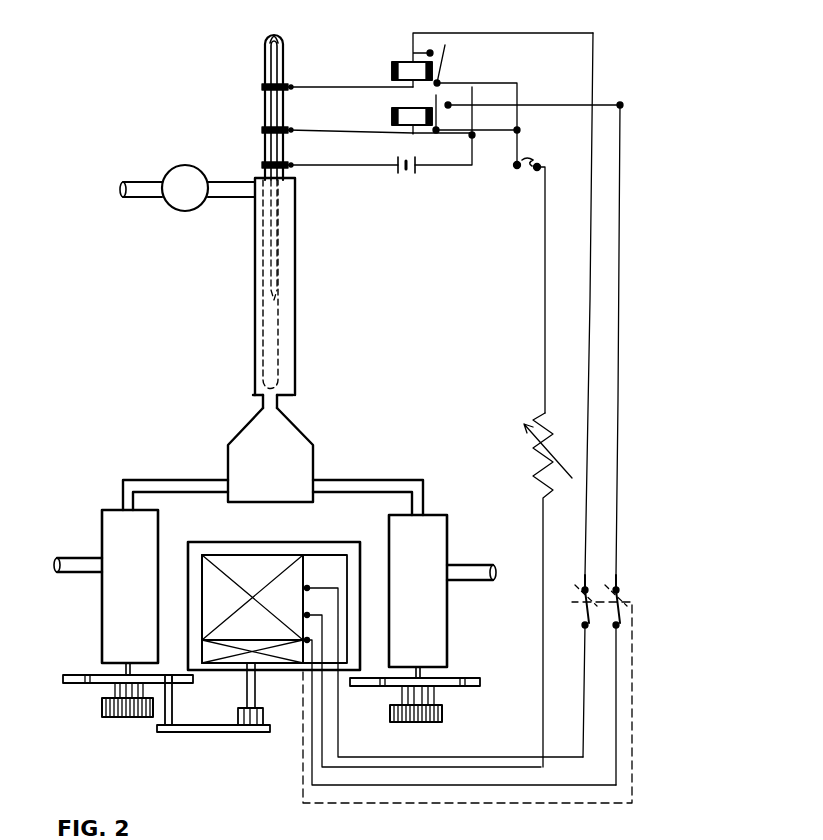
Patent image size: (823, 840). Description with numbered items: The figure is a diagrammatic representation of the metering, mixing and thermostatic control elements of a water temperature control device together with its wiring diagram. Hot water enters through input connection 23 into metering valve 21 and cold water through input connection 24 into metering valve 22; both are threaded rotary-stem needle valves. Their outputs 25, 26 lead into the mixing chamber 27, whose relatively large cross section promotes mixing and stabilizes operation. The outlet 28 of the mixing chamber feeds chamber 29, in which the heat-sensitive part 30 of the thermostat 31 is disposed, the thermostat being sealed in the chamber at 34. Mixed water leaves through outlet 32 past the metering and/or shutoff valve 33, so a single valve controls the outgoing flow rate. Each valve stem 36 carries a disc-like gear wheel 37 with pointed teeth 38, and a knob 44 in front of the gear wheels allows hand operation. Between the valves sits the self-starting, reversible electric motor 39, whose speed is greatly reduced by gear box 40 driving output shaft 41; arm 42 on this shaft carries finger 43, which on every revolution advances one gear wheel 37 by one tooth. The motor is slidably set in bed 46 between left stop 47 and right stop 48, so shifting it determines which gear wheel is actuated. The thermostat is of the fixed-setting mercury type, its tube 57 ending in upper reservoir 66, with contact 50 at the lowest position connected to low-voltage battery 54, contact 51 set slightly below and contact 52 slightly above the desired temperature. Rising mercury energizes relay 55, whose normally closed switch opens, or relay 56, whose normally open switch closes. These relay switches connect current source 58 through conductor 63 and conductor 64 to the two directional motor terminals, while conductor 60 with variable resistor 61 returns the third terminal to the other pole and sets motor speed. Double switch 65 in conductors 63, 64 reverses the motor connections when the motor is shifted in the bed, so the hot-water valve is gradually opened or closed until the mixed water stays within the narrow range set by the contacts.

The metering valve 21 is at (115, 640).
The metering valve 22 is at (430, 637).
The input connection 23 is at (60, 558).
The input connection 24 is at (466, 562).
The output 25 is at (175, 495).
The output 26 is at (424, 512).
The mixing chamber 27 is at (300, 465).
The outlet 28 is at (285, 412).
The chamber 29 is at (294, 287).
The heat-sensitive part 30 is at (275, 340).
The thermostat 31 is at (265, 105).
The outlet 32 is at (228, 200).
The metering and/or shutoff valve 33 is at (176, 210).
The seal 34 is at (290, 180).
The valve stem 36 is at (122, 680).
The gear wheel 37 is at (116, 692).
The pointed teeth 38 is at (480, 682).
The electric motor 39 is at (274, 568).
The gear box 40 is at (228, 668).
The output shaft 41 is at (256, 672).
The arm 42 is at (216, 733).
The finger 43 is at (162, 728).
The knob 44 is at (130, 720).
The bed 46 is at (240, 560).
The stop 47 is at (196, 562).
The stop 48 is at (352, 566).
The contact 50 is at (264, 165).
The contact 51 is at (264, 130).
The contact 52 is at (264, 86).
The low-voltage battery 54 is at (410, 174).
The relay 55 is at (392, 116).
The relay 56 is at (392, 74).
The tube 57 is at (280, 52).
The current source 58 is at (534, 160).
The conductor 60 is at (522, 290).
The variable resistor 61 is at (538, 462).
The conductor 63 is at (573, 395).
The conductor 64 is at (622, 337).
The double switch 65 is at (618, 604).
The upper reservoir 66 is at (268, 44).